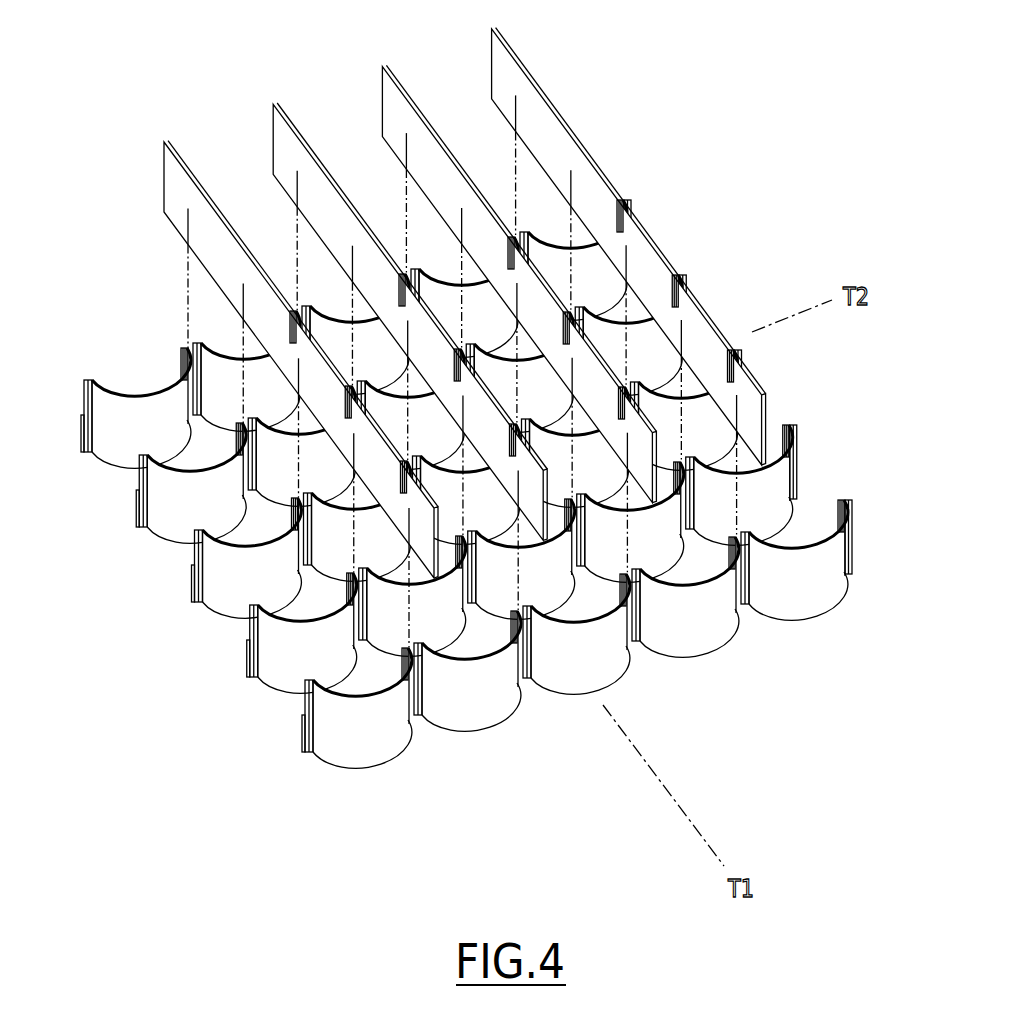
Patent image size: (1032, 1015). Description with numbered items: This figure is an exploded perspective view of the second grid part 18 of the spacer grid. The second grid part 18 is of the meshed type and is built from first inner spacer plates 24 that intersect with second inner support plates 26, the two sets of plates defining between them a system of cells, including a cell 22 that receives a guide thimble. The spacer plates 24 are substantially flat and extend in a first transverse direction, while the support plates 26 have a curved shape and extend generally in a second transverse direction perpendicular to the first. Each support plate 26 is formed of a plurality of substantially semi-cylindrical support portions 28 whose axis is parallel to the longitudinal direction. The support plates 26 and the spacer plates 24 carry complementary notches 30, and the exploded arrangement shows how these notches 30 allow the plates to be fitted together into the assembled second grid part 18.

The second grid part 18 is at (463, 407).
The cell 22 is at (500, 518).
The first inner spacer plates 24 is at (282, 140).
The second inner support plates 26 is at (117, 447).
The semi-cylindrical support portions 28 is at (140, 396).
The complementary notches 30 is at (570, 172).